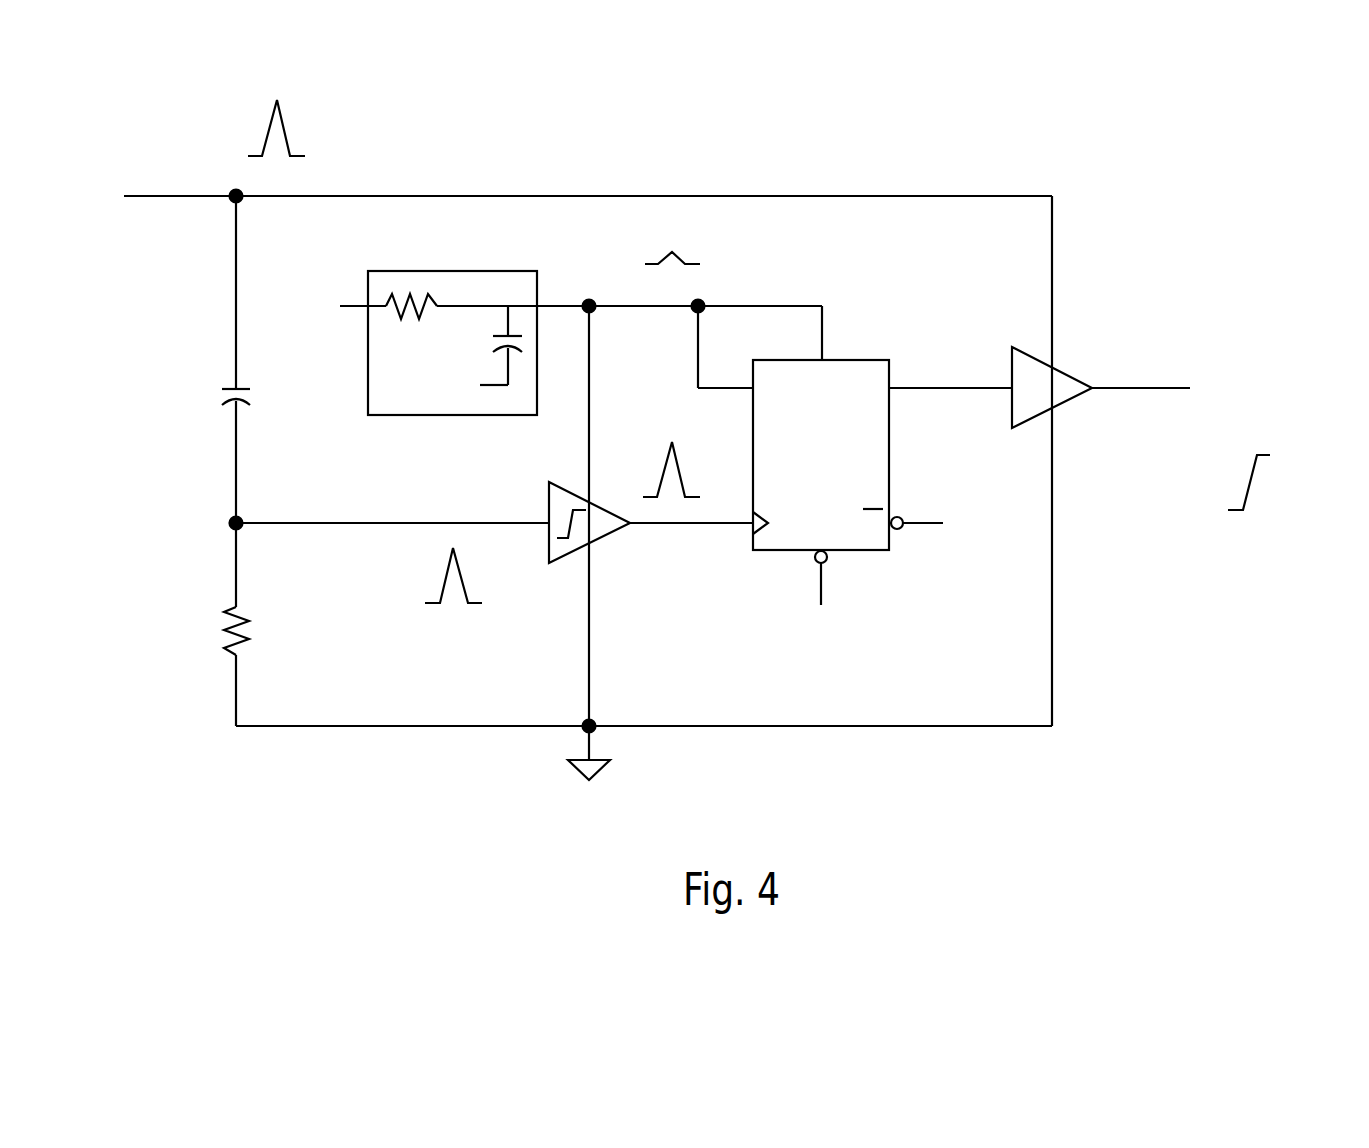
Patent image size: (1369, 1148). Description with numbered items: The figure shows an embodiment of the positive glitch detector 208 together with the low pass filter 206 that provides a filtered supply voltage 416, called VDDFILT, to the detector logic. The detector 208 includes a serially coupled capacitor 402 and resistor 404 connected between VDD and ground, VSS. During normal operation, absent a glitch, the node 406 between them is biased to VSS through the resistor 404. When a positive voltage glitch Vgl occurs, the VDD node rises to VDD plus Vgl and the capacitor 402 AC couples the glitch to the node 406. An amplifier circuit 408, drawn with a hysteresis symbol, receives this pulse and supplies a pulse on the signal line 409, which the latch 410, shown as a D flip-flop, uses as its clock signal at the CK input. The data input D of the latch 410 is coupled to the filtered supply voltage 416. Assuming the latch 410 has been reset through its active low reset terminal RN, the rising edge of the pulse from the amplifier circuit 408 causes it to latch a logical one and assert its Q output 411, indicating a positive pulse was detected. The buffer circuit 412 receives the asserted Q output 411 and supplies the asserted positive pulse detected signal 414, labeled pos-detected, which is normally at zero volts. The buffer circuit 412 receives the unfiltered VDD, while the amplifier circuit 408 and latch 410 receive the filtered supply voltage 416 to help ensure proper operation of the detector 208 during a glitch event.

The low pass filter 206 is at (400, 416).
The positive glitch detector 208 is at (1126, 145).
The capacitor 402 is at (236, 388).
The resistor 404 is at (230, 648).
The node 406 is at (232, 523).
The amplifier circuit 408 is at (568, 557).
The signal line 409 is at (672, 524).
The latch 410 is at (773, 551).
The Q output 411 is at (947, 389).
The buffer circuit 412 is at (1058, 369).
The positive pulse detected signal 414 is at (1135, 389).
The filtered supply voltage 416 is at (645, 307).